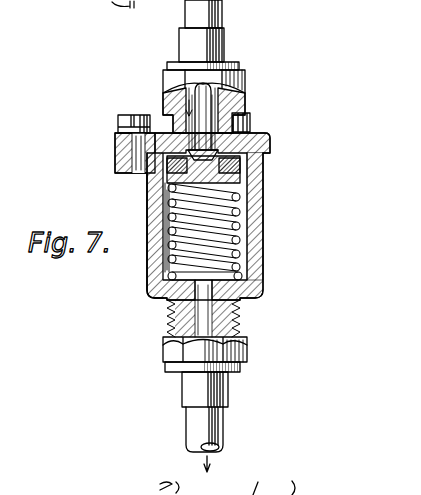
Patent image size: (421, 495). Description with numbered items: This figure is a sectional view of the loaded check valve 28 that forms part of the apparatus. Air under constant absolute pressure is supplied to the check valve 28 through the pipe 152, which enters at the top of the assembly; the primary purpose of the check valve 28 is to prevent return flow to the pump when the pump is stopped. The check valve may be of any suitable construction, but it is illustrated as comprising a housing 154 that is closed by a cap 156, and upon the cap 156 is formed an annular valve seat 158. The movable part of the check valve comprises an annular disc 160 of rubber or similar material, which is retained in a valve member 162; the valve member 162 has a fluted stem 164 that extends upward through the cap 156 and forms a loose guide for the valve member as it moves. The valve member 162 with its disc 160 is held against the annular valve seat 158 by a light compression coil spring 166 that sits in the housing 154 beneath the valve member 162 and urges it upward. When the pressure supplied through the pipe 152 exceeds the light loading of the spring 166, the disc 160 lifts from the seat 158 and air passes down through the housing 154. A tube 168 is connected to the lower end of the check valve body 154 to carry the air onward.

The check valve 28 is at (284, 180).
The pipe 152 is at (224, 12).
The housing 154 is at (153, 252).
The cap 156 is at (270, 140).
The annular valve seat 158 is at (250, 133).
The annular disc 160 is at (148, 183).
The valve member 162 is at (253, 202).
The fluted stem 164 is at (203, 112).
The compression coil spring 166 is at (172, 262).
The tube 168 is at (223, 446).